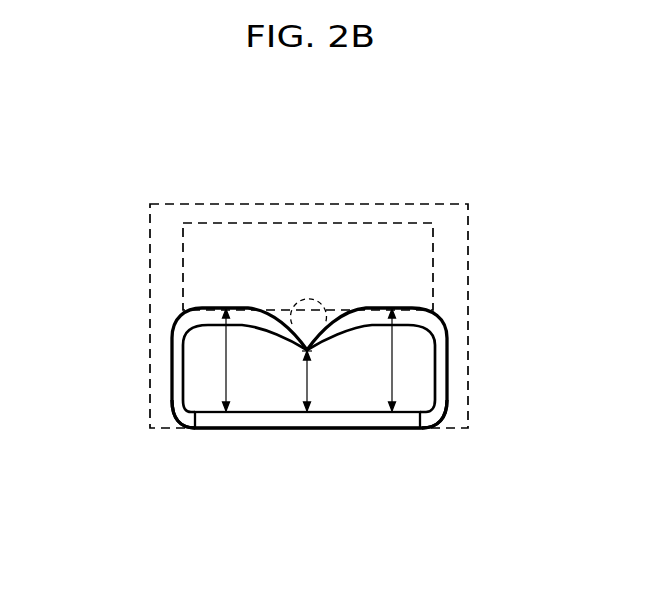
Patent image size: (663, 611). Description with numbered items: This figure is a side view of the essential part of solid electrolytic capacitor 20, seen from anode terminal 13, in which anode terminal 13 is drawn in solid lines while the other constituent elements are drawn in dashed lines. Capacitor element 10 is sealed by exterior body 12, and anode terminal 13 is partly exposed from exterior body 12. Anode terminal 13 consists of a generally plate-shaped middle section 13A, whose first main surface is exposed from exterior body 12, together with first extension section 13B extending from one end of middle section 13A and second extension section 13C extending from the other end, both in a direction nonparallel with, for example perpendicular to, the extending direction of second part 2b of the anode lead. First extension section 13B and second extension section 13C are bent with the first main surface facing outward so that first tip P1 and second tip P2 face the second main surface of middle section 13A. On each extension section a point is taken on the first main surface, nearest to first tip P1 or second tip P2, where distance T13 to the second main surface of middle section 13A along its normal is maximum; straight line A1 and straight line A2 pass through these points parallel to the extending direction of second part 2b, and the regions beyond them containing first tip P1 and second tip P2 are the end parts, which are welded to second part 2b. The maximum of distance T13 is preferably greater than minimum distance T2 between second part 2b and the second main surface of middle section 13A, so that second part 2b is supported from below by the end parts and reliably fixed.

The solid electrolytic capacitor 20 is at (495, 176).
The exterior body 12 is at (172, 222).
The capacitor element 10 is at (363, 255).
The second part 2b is at (297, 297).
The anode terminal 13 is at (457, 518).
The middle section 13A is at (297, 428).
The first extension section 13B is at (179, 431).
The second extension section 13C is at (430, 431).
The straight line A1 is at (238, 308).
The straight line A2 is at (393, 308).
The distance T13 is at (521, 374).
The first tip P1 is at (299, 362).
The second tip P2 is at (315, 362).
The minimum distance T2 is at (303, 381).